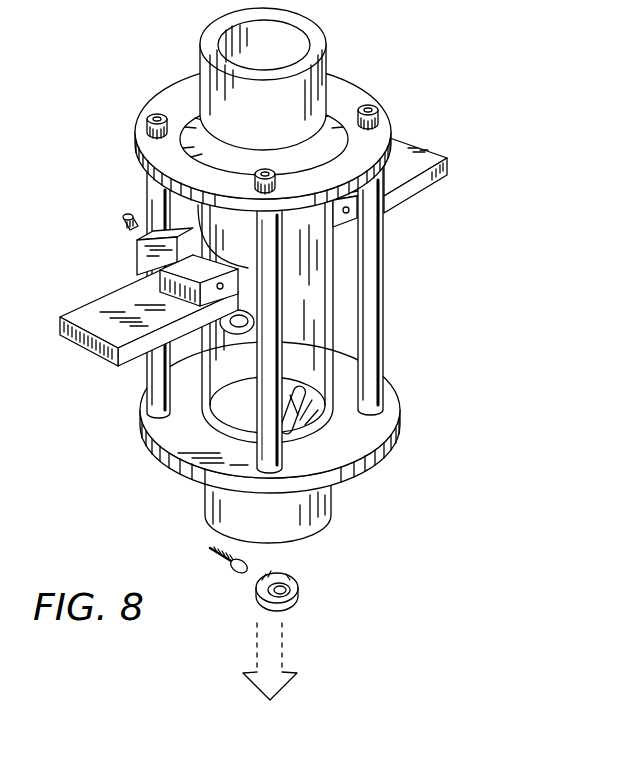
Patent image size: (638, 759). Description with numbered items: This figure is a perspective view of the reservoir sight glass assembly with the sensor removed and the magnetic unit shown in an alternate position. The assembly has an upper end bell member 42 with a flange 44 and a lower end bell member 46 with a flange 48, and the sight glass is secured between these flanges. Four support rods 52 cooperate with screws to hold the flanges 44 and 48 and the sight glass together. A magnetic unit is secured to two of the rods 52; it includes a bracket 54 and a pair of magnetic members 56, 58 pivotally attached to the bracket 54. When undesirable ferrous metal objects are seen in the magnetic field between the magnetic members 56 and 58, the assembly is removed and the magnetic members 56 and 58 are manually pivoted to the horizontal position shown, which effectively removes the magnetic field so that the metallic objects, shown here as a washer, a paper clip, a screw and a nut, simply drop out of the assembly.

The upper end bell member 42 is at (200, 63).
The flange 44 is at (150, 101).
The lower end bell member 46 is at (333, 493).
The flange 48 is at (157, 460).
The support rods 52 is at (147, 383).
The bracket 54 is at (160, 238).
The magnetic member 56 is at (90, 352).
The magnetic member 58 is at (425, 188).